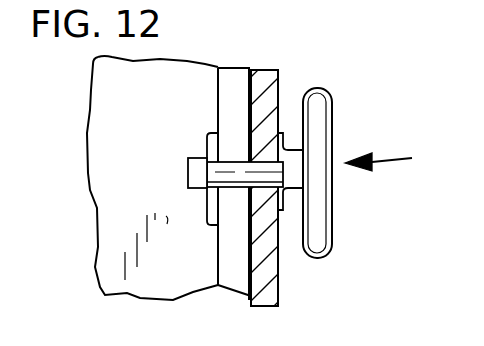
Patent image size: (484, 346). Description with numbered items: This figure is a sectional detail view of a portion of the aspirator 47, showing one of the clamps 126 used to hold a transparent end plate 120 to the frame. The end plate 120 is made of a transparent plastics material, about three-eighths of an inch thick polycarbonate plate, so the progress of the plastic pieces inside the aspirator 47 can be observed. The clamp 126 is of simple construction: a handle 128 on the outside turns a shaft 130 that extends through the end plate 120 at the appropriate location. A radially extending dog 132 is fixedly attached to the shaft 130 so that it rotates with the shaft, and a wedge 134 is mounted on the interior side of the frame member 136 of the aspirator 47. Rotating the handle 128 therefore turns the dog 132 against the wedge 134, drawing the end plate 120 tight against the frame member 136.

The aspirator 47 is at (227, 67).
The end plate 120 is at (283, 281).
The clamp 126 is at (399, 158).
The handle 128 is at (322, 223).
The shaft 130 is at (267, 68).
The radially extending dog 132 is at (188, 173).
The wedge 134 is at (208, 140).
The frame member 136 is at (218, 98).